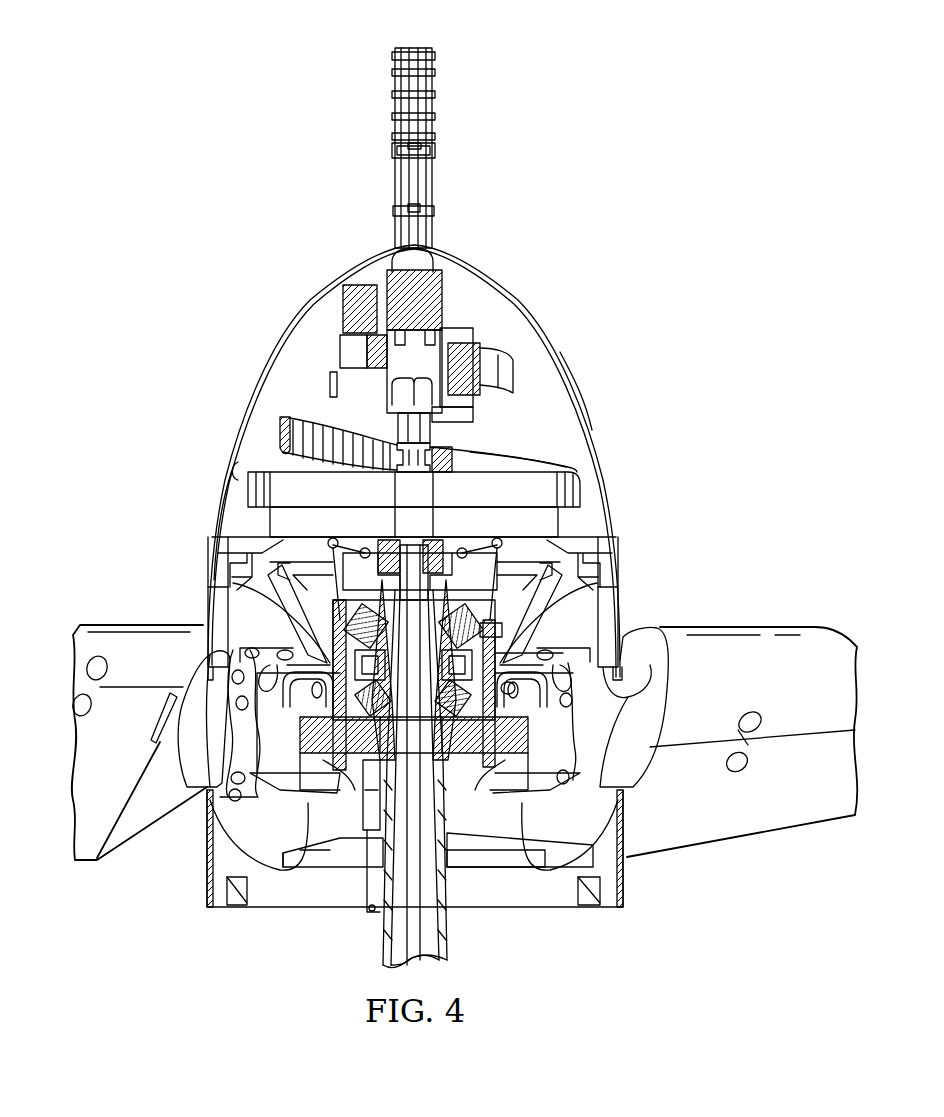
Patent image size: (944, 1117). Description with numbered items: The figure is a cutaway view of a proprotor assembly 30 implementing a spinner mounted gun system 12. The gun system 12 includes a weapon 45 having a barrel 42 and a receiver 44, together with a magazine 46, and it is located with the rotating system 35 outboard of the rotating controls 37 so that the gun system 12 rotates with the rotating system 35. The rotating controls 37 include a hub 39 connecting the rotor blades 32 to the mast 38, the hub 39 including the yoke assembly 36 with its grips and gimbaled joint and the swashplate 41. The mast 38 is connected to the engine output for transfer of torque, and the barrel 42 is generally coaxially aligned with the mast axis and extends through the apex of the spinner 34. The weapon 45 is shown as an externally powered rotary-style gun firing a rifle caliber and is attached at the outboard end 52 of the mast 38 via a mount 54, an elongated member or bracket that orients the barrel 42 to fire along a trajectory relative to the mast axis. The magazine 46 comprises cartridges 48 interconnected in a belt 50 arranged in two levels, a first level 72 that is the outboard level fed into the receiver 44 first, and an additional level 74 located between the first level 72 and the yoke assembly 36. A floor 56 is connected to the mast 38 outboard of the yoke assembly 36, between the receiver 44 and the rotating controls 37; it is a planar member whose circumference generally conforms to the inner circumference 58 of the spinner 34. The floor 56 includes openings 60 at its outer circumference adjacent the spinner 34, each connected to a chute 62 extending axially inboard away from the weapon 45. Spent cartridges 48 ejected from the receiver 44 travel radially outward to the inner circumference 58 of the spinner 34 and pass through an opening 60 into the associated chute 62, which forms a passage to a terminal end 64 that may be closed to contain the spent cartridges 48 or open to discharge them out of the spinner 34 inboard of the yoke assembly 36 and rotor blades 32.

The proprotor assembly 30 is at (559, 66).
The gun system 12 is at (376, 114).
The weapon 45 is at (543, 180).
The barrel 42 is at (394, 211).
The receiver 44 is at (444, 315).
The spinner 34 is at (270, 352).
The magazine 46 is at (528, 398).
The rotating system 35 is at (685, 370).
The cartridges 48 is at (330, 384).
The mount 54 is at (393, 455).
The belt 50 is at (487, 462).
The first level 72 is at (528, 482).
The inner circumference 58 is at (240, 448).
The openings 60 is at (232, 530).
The outboard end 52 is at (413, 478).
The additional level 74 is at (505, 520).
The floor 56 is at (597, 553).
The chute 62 is at (262, 605).
The rotating controls 37 is at (582, 630).
The rotor blades 32 is at (755, 625).
The terminal end 64 is at (655, 685).
The yoke assembly 36 is at (355, 785).
The mast 38 is at (452, 948).
The hub 39 is at (328, 925).
The swashplate 41 is at (493, 870).